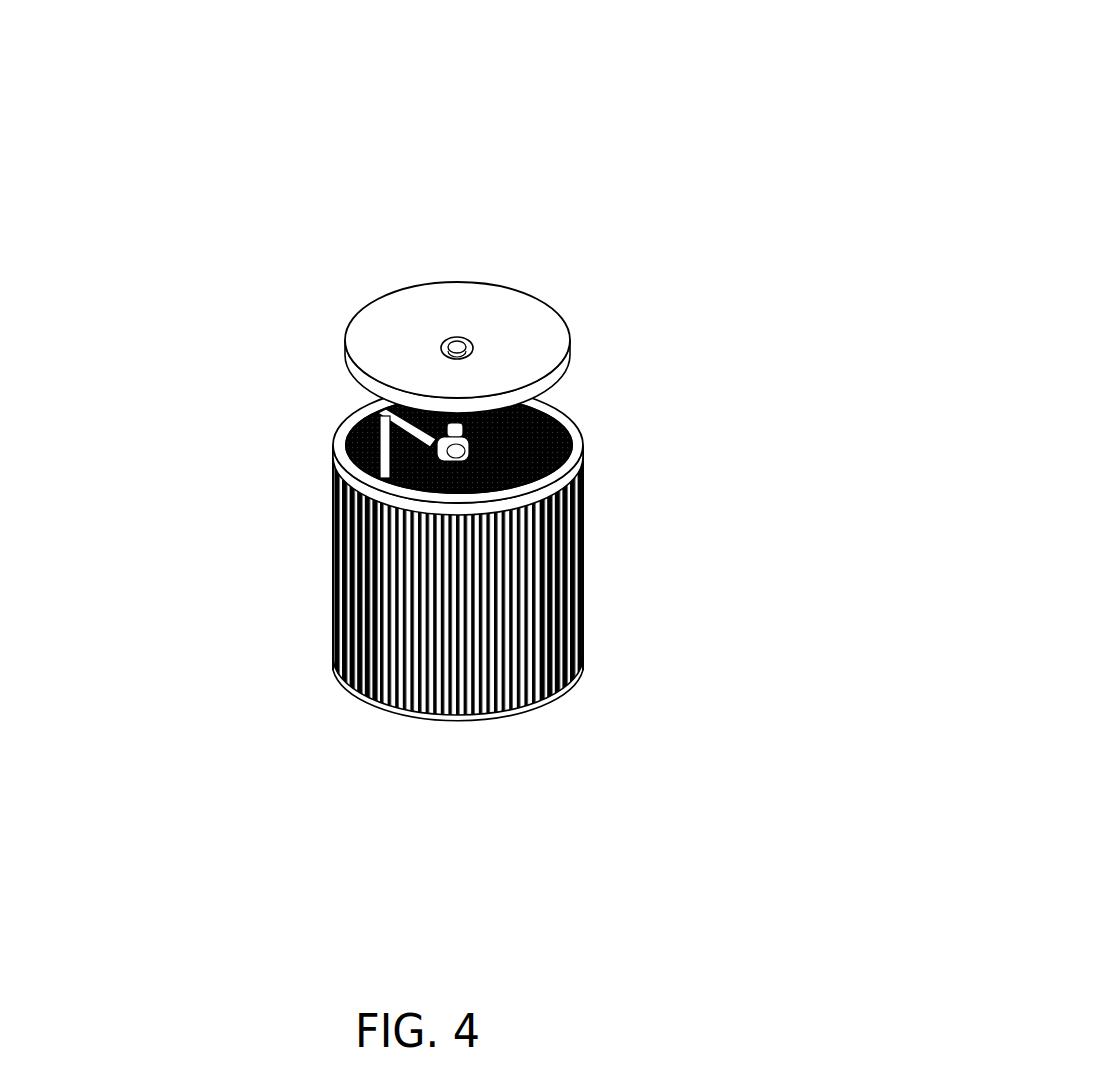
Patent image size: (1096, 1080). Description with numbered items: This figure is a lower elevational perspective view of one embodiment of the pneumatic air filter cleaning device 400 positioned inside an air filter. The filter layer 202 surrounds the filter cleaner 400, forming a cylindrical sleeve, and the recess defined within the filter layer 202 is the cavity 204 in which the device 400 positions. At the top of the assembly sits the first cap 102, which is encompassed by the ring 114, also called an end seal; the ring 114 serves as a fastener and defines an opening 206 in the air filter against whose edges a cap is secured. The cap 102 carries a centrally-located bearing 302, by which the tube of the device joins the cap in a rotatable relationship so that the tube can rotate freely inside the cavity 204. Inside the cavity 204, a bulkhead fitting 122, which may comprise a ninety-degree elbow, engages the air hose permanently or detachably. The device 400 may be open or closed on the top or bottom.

The device 400 is at (745, 72).
The bearing 302 is at (440, 342).
The first cap 102 is at (545, 333).
The bulkhead fitting 122 is at (373, 409).
The cavity 204 is at (547, 396).
The opening 206 is at (550, 437).
The ring 114 is at (333, 442).
The filter layer 202 is at (580, 535).